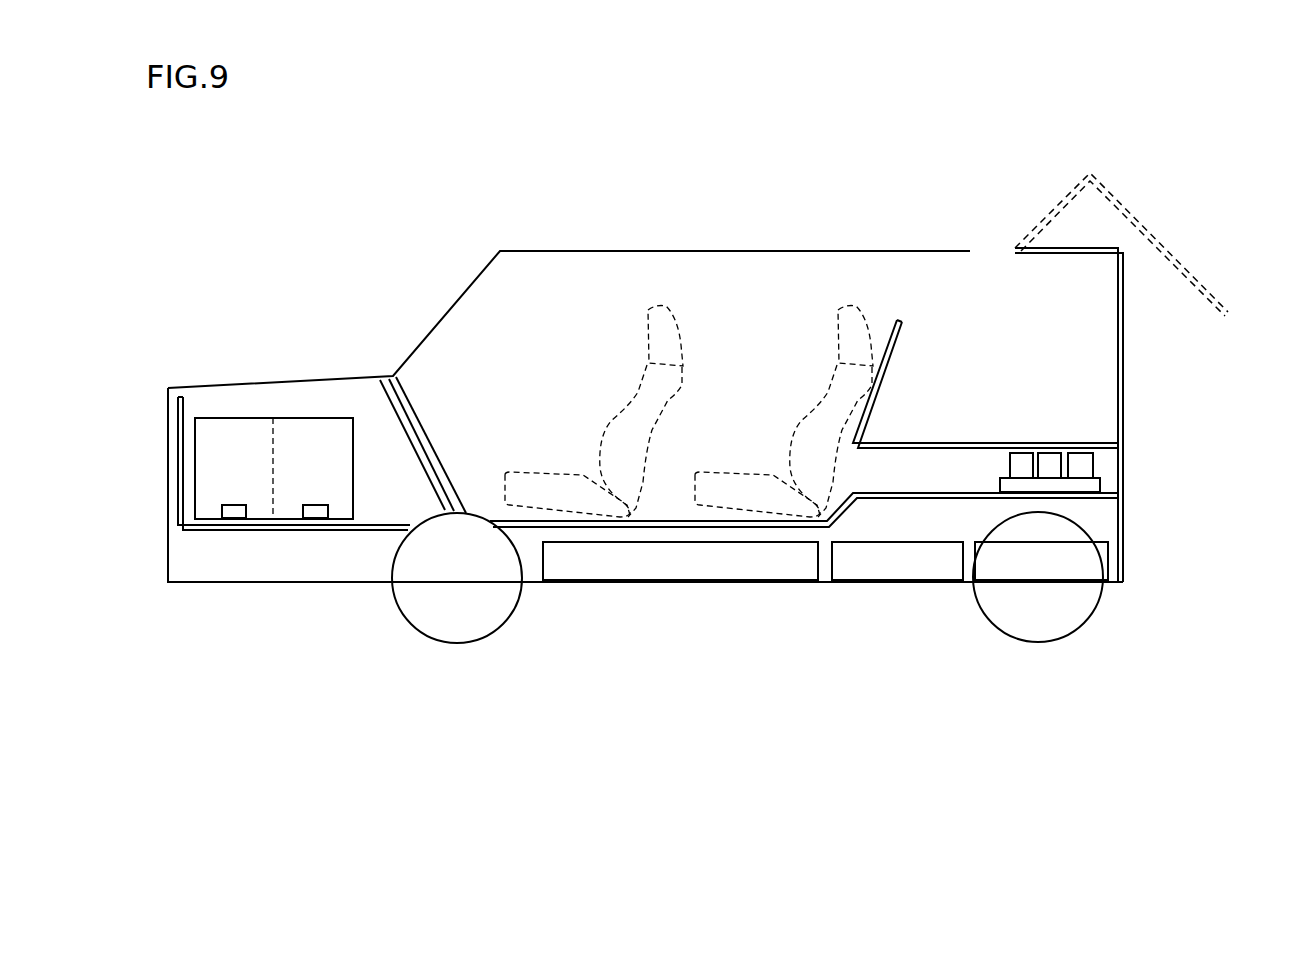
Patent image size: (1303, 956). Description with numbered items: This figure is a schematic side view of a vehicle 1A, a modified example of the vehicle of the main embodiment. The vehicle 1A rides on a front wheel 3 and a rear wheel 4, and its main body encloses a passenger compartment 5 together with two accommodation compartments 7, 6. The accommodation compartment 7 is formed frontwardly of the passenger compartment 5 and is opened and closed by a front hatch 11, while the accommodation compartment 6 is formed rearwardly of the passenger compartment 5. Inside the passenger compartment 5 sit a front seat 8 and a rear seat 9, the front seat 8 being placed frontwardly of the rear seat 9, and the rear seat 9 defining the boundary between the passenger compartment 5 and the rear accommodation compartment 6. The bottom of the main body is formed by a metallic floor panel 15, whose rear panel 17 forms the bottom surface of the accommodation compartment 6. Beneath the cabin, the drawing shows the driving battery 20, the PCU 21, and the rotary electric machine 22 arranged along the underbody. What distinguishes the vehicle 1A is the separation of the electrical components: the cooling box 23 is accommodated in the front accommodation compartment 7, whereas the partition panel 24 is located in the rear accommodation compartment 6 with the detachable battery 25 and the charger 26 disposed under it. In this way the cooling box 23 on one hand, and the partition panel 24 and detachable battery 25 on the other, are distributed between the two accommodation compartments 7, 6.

The vehicle 1A is at (590, 213).
The front wheel 3 is at (517, 613).
The rear wheel 4 is at (1093, 614).
The passenger compartment 5 is at (1090, 173).
The accommodation compartment 6 is at (978, 282).
The accommodation compartment 7 is at (302, 396).
The front seat 8 is at (657, 305).
The rear seat 9 is at (850, 305).
The front hatch 11 is at (258, 383).
The floor panel 15 is at (1072, 500).
The rear panel 17 is at (1135, 500).
The driving battery 20 is at (730, 570).
The PCU (Power Control Unit) 21 is at (918, 572).
The rotary electric machine 22 is at (1040, 572).
The cooling box 23 is at (210, 418).
The partition panel 24 is at (1100, 443).
The detachable battery 25 is at (1093, 471).
The charger 26 is at (1100, 497).